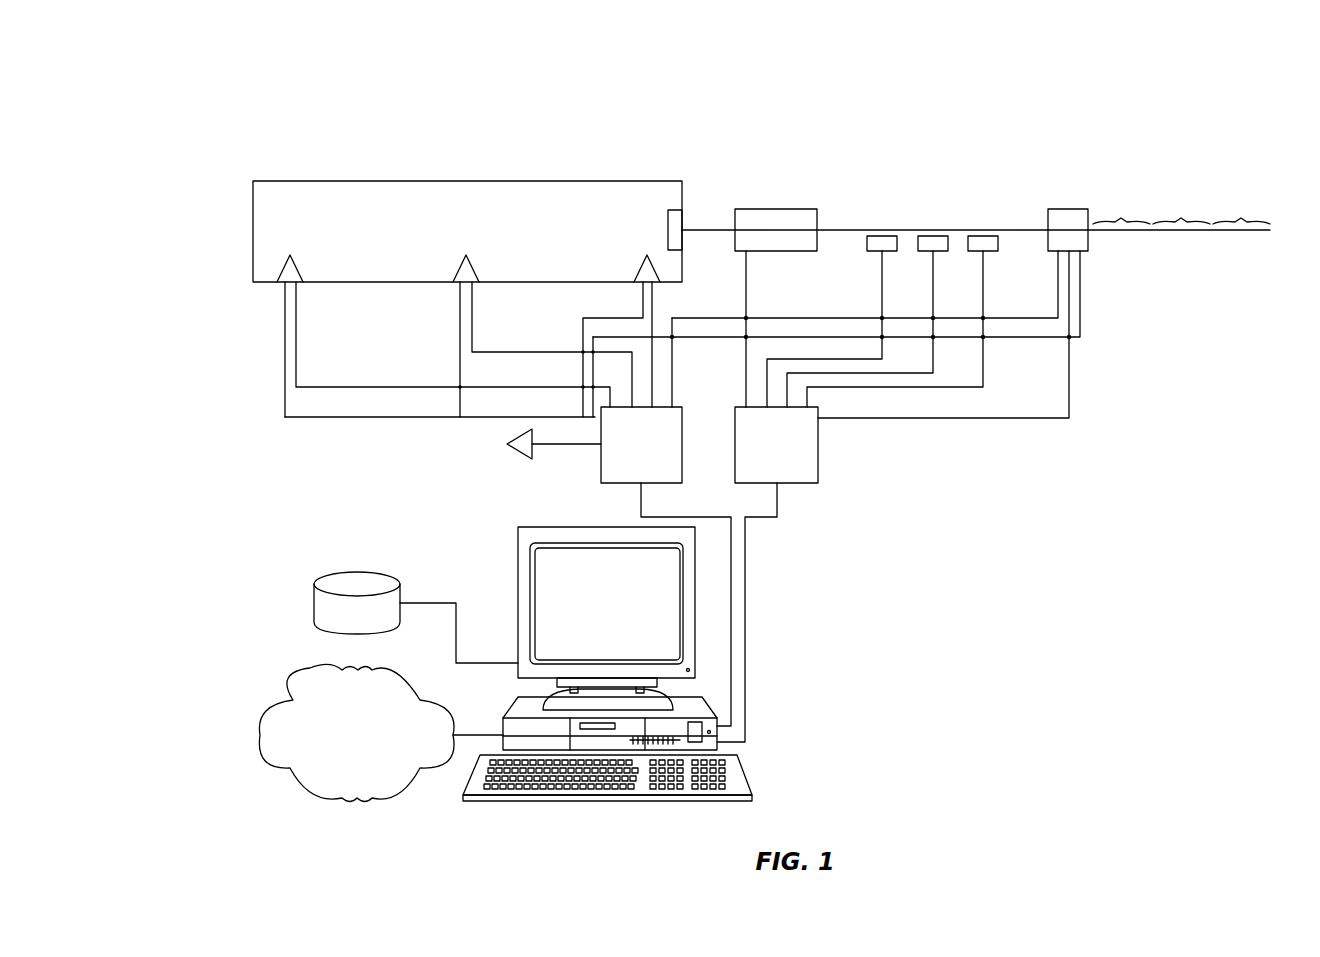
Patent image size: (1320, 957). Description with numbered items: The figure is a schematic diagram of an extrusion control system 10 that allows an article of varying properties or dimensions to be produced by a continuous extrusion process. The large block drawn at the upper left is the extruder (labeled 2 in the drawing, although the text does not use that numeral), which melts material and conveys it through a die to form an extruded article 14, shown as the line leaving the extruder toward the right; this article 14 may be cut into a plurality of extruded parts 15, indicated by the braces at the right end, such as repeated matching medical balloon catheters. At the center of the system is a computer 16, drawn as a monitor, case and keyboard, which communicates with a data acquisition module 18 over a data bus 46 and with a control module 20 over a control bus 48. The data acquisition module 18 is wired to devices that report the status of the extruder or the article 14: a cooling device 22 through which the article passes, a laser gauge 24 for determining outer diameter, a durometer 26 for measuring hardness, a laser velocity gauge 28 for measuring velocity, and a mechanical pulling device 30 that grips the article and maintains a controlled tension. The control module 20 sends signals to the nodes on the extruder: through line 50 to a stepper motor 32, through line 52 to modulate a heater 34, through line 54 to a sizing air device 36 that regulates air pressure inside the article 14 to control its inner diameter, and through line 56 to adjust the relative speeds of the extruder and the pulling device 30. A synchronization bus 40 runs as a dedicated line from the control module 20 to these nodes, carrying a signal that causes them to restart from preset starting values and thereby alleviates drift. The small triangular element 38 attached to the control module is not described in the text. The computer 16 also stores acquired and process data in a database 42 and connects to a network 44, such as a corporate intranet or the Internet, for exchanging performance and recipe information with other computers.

The extrusion control system 10 is at (312, 77).
The process tank 2 is at (290, 181).
The extruded article 14 is at (695, 230).
The extruded parts 15 is at (1181, 207).
The computer 16 is at (517, 705).
The data acquisition module 18 is at (818, 458).
The control module 20 is at (601, 458).
The cooling device 22 is at (775, 209).
The laser gauge 24 is at (883, 236).
The durometer 26 is at (933, 236).
The laser velocity gauge 28 is at (983, 236).
The mechanical pulling device 30 is at (1067, 209).
The stepper motor 32 is at (280, 270).
The heater 34 is at (458, 270).
The sizing air device 36 is at (638, 270).
The alarm 38 is at (507, 445).
The synchronization bus 40 is at (335, 418).
The database 42 is at (313, 603).
The network 44 is at (260, 735).
The data bus 46 is at (777, 496).
The control bus 48 is at (641, 497).
The line 50 is at (296, 362).
The line 52 is at (546, 352).
The line 54 is at (652, 358).
The line 56 is at (672, 385).